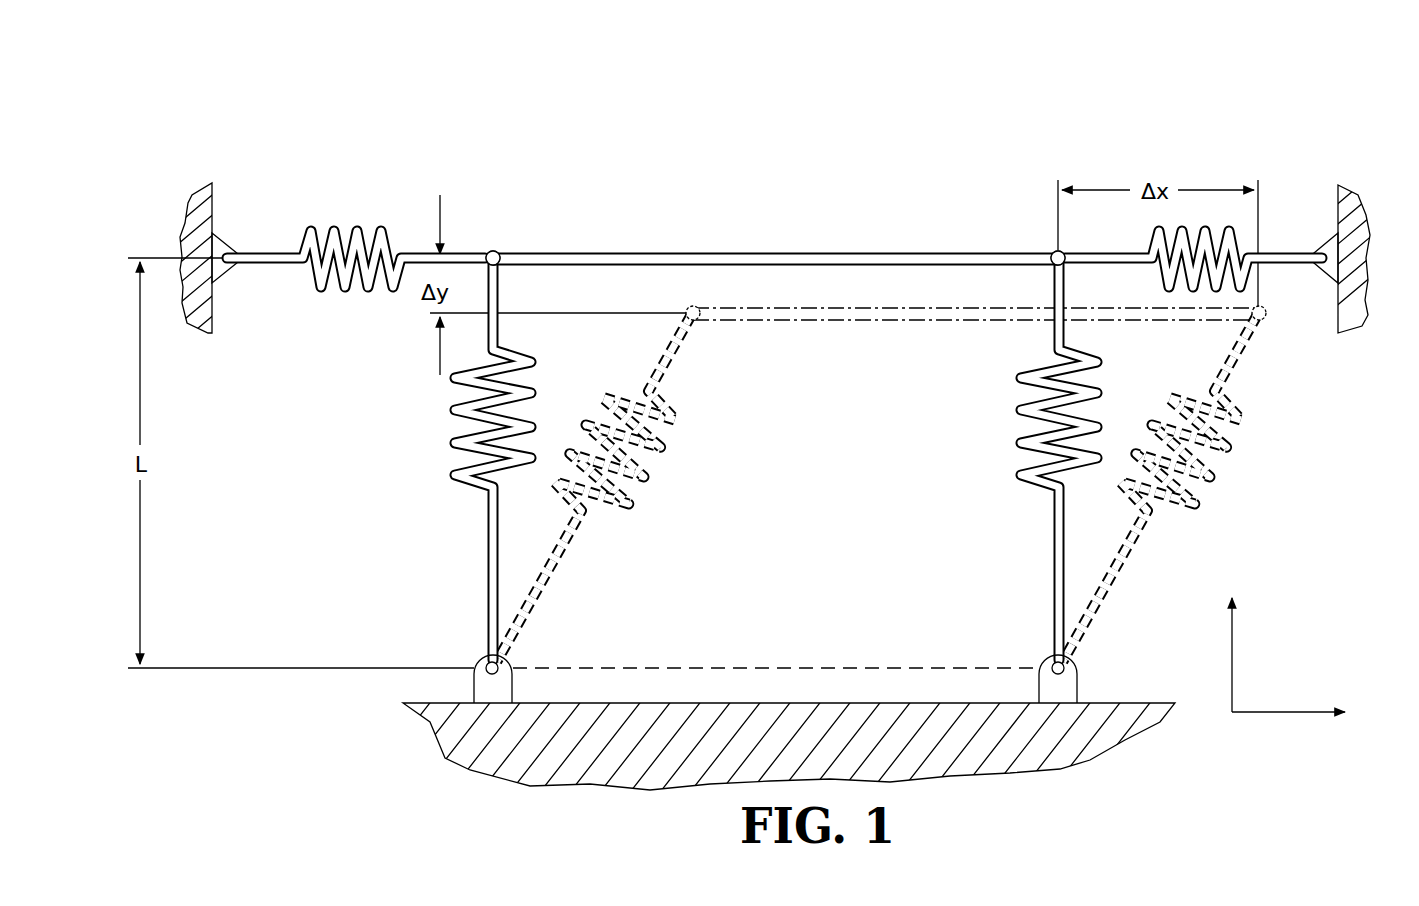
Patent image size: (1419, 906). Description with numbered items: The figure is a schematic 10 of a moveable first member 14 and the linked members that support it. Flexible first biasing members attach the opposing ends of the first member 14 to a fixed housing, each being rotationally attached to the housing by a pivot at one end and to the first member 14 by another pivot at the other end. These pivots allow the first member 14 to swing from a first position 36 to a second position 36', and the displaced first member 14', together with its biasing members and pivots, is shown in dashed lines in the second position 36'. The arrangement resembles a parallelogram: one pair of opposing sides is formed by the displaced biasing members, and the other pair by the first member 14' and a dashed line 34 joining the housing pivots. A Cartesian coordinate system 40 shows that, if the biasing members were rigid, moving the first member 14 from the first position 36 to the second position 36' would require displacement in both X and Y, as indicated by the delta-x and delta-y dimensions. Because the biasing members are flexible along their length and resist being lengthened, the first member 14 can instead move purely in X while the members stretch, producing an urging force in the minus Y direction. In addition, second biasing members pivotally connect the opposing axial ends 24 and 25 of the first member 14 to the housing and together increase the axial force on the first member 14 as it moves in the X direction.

The schematic 10 is at (942, 126).
The first member 14 is at (775, 198).
The first member in second position 14' is at (976, 376).
The first axial end 24 is at (501, 251).
The second axial end 25 is at (1043, 250).
The dashed line 34 is at (785, 665).
The first position 36 is at (775, 198).
The second position 36' is at (976, 376).
The Cartesian coordinate system 40 is at (1272, 712).